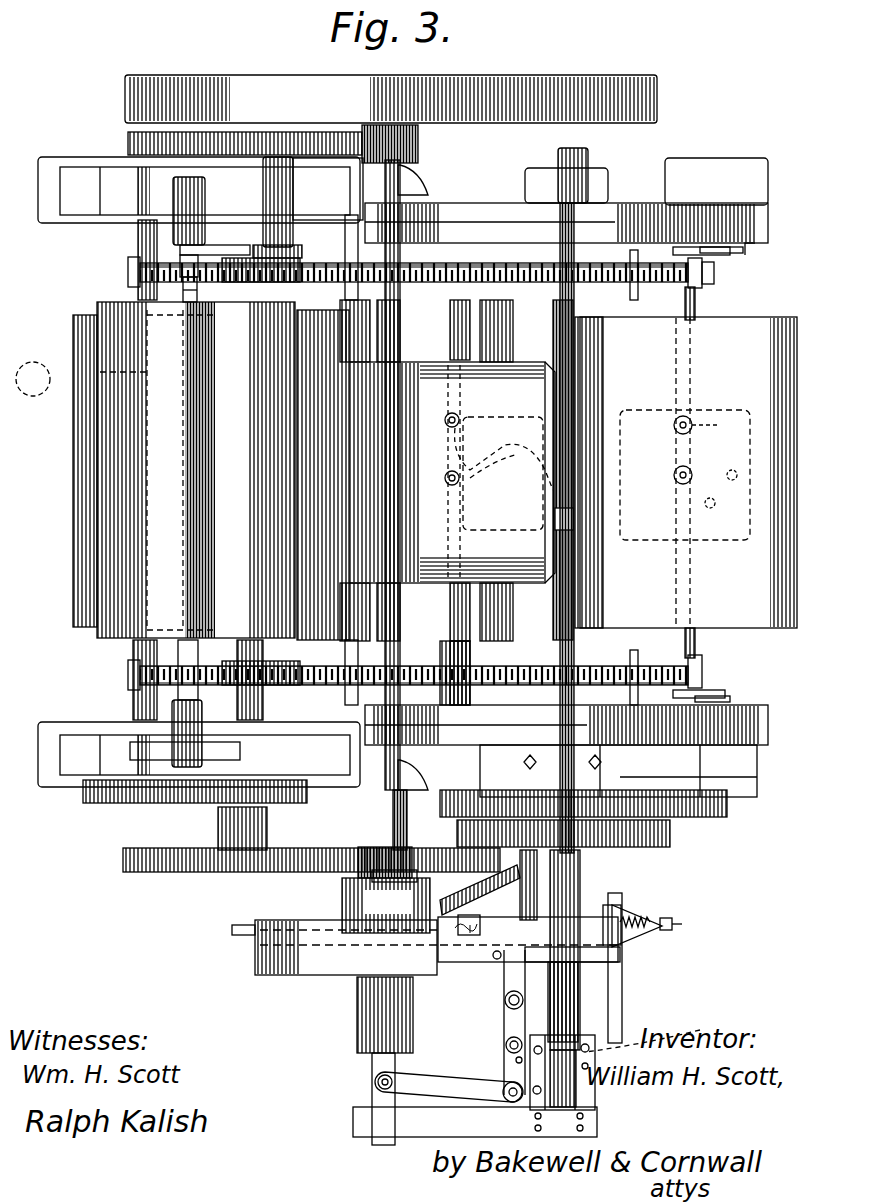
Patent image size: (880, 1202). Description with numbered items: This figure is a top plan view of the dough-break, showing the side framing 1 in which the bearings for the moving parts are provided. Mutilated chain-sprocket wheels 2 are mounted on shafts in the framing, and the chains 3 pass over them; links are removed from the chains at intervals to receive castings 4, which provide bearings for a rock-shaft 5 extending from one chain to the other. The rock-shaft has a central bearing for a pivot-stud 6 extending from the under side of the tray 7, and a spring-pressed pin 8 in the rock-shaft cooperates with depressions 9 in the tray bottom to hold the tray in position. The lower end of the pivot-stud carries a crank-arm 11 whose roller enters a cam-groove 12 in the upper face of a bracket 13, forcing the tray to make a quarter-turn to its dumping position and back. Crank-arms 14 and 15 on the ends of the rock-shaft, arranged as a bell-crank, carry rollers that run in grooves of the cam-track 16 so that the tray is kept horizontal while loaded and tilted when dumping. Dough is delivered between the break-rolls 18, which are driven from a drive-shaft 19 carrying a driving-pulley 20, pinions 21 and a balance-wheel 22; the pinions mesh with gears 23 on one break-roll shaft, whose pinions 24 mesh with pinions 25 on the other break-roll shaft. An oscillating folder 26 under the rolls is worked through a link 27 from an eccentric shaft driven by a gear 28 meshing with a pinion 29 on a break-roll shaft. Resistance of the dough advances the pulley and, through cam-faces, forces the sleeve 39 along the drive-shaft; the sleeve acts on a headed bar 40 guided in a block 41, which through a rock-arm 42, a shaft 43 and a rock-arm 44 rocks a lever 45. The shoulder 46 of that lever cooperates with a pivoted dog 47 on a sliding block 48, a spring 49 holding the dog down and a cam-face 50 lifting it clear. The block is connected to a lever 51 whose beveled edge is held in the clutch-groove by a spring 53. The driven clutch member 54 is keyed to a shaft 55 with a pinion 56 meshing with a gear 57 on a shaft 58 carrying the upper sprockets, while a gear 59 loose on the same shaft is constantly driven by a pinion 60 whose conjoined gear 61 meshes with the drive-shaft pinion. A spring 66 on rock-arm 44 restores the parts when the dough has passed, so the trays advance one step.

The side framing 1 is at (403, 472).
The mutilated chain-sprocket wheels 2 is at (128, 278).
The chains 3 is at (490, 285).
The castings 4 is at (702, 285).
The rock-shaft 5 is at (697, 304).
The pivot-stud 6 is at (448, 485).
The tray 7 is at (73, 463).
The spring-pressed pin 8 is at (448, 414).
The depressions 9 is at (732, 470).
The crank-arm 11 is at (505, 478).
The cam-groove 12 is at (556, 490).
The bracket 13 is at (558, 520).
The crank-arm 14 is at (742, 252).
The crank-arm 15 is at (673, 253).
The cam-track 16 is at (566, 474).
The break-rolls 18 is at (196, 470).
The drive-shaft 19 is at (400, 298).
The driving-pulley 20 is at (336, 947).
The pinions 21 is at (418, 145).
The balance-wheel 22 is at (391, 99).
The gears 23 is at (128, 141).
The pinions 24 is at (295, 808).
The pinions 25 is at (142, 806).
The oscillating folder 26 is at (73, 373).
The link 27 is at (222, 245).
The gear 28 is at (300, 265).
The pinion 29 is at (212, 285).
The sleeve 39 is at (357, 1032).
The headed bar 40 is at (372, 1098).
The block 41 is at (370, 1118).
The rock-arm 42 is at (449, 1084).
The shaft 43 is at (512, 1095).
The rock-arm 44 is at (508, 1064).
The lever 45 is at (504, 1020).
The shoulder 46 is at (496, 960).
The pivoted dog 47 is at (476, 920).
The sliding block 48 is at (445, 940).
The spring 49 is at (528, 905).
The cam-face 50 is at (440, 905).
The lever 51 is at (580, 950).
The spring 53 is at (640, 925).
The driven member of clutch 54 is at (548, 952).
The shaft 55 is at (573, 1016).
The pinion 56 is at (612, 792).
The gear 57 is at (686, 805).
The shaft 58 is at (566, 604).
The gear 59 is at (672, 842).
The pinion 60 is at (400, 812).
The gear 61 is at (380, 879).
The spring 66 is at (662, 1022).